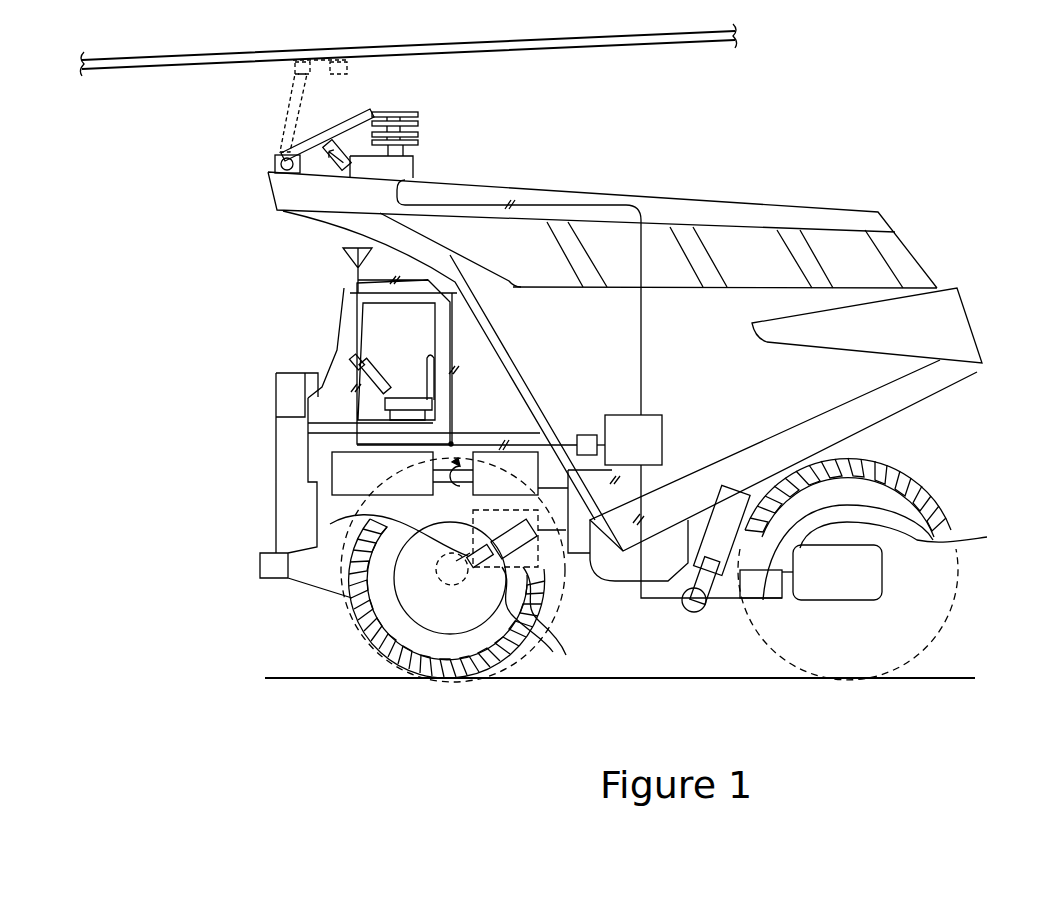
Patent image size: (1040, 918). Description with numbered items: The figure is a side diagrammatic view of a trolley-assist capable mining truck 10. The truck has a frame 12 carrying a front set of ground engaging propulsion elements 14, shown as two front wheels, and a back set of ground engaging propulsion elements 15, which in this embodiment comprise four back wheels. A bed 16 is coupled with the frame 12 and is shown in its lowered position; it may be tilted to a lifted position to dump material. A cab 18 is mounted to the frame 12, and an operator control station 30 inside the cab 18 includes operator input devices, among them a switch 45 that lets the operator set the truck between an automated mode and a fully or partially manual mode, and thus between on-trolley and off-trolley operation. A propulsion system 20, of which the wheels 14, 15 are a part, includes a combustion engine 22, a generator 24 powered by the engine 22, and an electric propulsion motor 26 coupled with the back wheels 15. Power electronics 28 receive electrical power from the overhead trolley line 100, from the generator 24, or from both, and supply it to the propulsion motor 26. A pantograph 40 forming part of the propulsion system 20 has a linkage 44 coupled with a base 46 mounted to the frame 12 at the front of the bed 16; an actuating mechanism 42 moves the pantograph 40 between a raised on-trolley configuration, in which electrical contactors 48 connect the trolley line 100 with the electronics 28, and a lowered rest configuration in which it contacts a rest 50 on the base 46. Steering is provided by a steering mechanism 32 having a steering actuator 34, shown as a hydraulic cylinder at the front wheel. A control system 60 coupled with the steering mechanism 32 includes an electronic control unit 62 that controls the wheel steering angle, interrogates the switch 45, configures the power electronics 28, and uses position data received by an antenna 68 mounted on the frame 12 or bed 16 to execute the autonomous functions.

The mining truck 10 is at (936, 231).
The frame 12 is at (276, 580).
The front set of ground engaging propulsion elements 14 is at (380, 650).
The back set of ground engaging propulsion elements 15 is at (935, 498).
The bed 16 is at (968, 303).
The cab 18 is at (337, 344).
The propulsion system 20 is at (468, 499).
The combustion engine 22 is at (332, 458).
The generator 24 is at (482, 445).
The propulsion motor 26 is at (884, 574).
The power electronics 28 is at (652, 414).
The operator control station 30 is at (383, 357).
The steering mechanism 32 is at (541, 611).
The steering actuator 34 is at (498, 568).
The pantograph 40 is at (334, 160).
The actuating mechanism 42 is at (340, 168).
The linkage 44 is at (326, 132).
The switch 45 is at (362, 350).
The base 46 is at (418, 167).
The electrical contactors 48 is at (406, 111).
The rest 50 is at (420, 137).
The control system 60 is at (580, 427).
The electronic control unit 62 is at (588, 434).
The antenna 68 is at (350, 256).
The overhead trolley line 100 is at (110, 53).